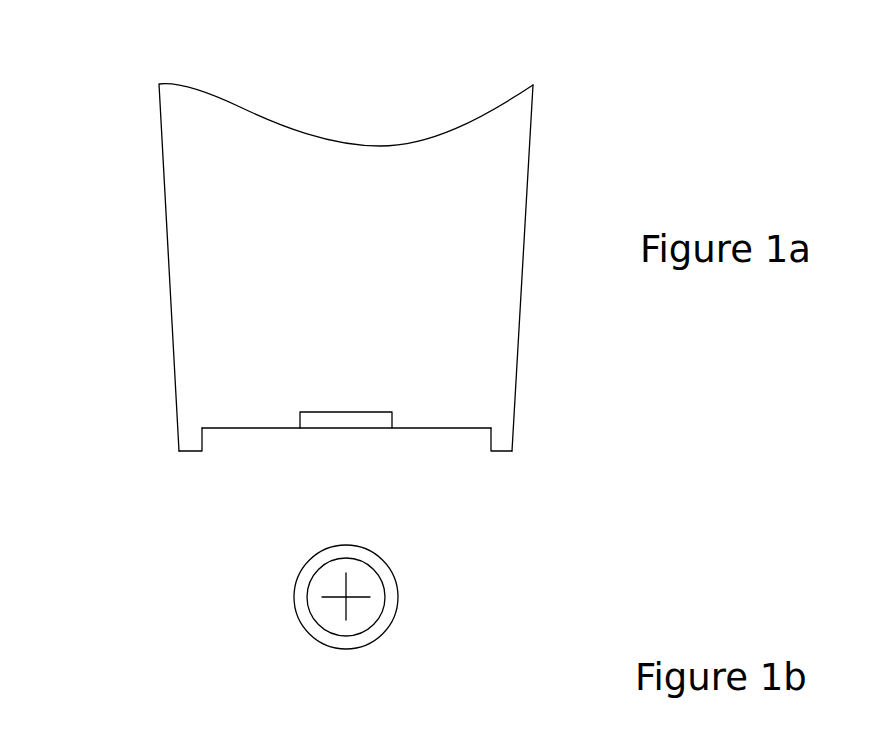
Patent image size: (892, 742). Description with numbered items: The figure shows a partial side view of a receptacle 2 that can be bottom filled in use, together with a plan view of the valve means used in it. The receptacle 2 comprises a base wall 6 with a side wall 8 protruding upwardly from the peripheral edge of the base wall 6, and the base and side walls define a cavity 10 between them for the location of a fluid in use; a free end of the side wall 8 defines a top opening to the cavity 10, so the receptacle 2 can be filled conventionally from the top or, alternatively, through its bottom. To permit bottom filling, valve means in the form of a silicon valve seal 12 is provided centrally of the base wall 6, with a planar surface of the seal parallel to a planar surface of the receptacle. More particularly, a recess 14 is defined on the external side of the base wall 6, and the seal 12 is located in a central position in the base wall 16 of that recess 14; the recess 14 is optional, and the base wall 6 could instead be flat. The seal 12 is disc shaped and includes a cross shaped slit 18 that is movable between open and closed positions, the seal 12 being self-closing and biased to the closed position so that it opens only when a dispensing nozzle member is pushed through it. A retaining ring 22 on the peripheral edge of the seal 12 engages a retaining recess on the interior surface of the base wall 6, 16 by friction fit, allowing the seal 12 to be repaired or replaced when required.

In FIG. 1A, the receptacle 2 is at (136, 181).
In FIG. 1A, the base wall 6 is at (502, 452).
In FIG. 1A, the side wall 8 is at (520, 313).
In FIG. 1A, the cavity 10 is at (473, 235).
In FIG. 1A, the silicon valve seal 12 is at (399, 403).
In FIG. 1B, the silicon valve seal 12 is at (404, 620).
In FIG. 1A, the recess 14 is at (230, 442).
In FIG. 1A, the base wall of the recess 16 is at (267, 428).
In FIG. 1B, the cross shaped slit 18 is at (338, 604).
In FIG. 1B, the retaining ring 22 is at (367, 648).